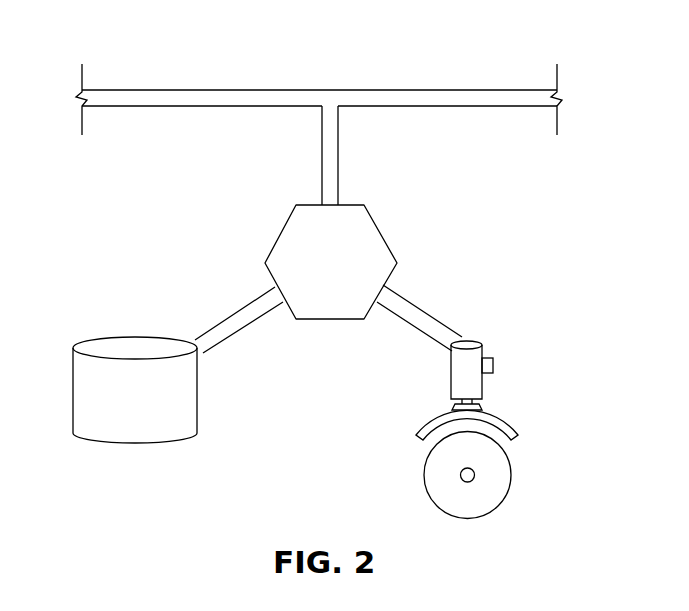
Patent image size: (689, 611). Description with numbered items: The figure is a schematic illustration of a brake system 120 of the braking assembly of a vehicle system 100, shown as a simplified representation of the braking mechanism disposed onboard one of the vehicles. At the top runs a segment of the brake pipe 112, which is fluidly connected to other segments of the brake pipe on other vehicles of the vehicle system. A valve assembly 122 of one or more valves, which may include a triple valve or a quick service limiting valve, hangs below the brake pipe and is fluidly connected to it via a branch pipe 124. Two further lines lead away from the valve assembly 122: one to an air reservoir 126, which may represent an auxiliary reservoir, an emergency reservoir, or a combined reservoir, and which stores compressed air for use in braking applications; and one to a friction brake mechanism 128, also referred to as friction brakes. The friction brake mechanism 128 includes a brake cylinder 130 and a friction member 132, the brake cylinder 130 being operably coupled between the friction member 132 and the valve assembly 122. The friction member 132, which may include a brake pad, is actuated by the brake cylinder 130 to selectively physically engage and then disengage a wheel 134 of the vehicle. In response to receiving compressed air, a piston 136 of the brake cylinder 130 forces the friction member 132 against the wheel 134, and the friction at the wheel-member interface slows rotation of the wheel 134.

The irrigation system 100 is at (522, 58).
The brake pipe 112 is at (452, 98).
The brake system 120 is at (130, 241).
The valve assembly 122 is at (380, 232).
The branch pipe 124 is at (322, 150).
The air reservoir 126 is at (134, 348).
The friction brake mechanism 128 is at (522, 358).
The brake cylinder 130 is at (461, 364).
The friction member 132 is at (421, 431).
The wheel 134 is at (488, 490).
The piston 136 is at (476, 405).